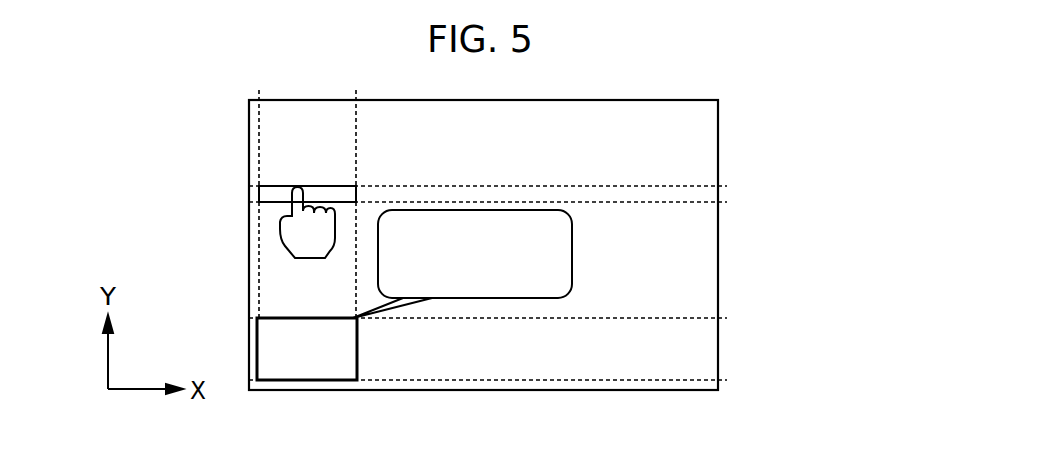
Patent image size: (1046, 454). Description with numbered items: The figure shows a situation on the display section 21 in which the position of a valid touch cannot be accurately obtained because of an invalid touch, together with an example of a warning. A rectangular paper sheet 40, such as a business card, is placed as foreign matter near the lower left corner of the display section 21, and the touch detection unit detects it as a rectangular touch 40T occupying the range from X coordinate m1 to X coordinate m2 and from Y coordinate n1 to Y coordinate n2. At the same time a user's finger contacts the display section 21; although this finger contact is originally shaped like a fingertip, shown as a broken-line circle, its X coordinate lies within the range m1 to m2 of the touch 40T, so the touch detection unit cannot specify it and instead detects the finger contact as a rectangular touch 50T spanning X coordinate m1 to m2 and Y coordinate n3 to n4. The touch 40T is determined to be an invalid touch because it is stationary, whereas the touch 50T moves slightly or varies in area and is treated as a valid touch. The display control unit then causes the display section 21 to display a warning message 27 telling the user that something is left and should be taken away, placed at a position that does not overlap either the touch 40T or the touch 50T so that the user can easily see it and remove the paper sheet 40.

The display section 21 is at (638, 100).
The warning message 27 is at (572, 254).
The paper sheet 40 is at (339, 376).
The touch corresponding to the paper sheet 40T is at (332, 372).
The touch by the user's finger 50T is at (292, 191).
The X coordinate m1 is at (260, 192).
The X coordinate m2 is at (357, 192).
The Y coordinate n1 is at (503, 382).
The Y coordinate n2 is at (503, 320).
The Y coordinate n3 is at (503, 204).
The Y coordinate n4 is at (503, 187).